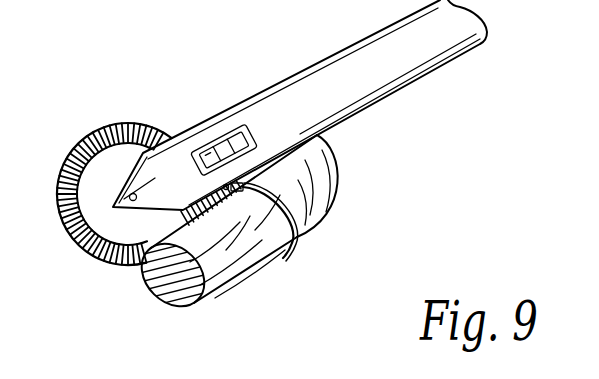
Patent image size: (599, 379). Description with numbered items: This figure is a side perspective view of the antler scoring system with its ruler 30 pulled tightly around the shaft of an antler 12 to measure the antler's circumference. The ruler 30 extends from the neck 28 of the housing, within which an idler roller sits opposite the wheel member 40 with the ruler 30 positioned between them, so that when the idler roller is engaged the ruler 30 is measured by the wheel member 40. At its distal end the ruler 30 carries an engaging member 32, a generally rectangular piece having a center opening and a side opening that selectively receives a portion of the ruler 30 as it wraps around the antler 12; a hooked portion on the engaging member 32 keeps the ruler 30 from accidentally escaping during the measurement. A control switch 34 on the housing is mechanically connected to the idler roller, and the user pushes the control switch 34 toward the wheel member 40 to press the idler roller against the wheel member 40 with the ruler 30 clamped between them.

The antler 12 is at (238, 286).
The neck 28 is at (362, 92).
The ruler 30 is at (299, 239).
The engaging member 32 is at (243, 188).
The control switch 34 is at (228, 128).
The wheel member 40 is at (107, 133).